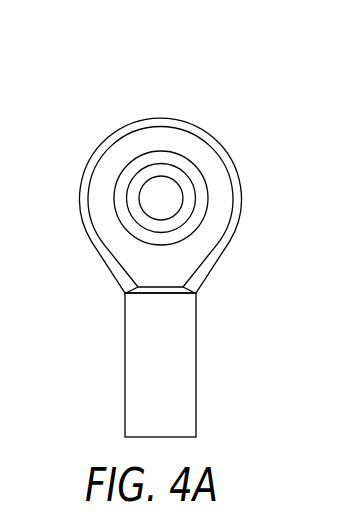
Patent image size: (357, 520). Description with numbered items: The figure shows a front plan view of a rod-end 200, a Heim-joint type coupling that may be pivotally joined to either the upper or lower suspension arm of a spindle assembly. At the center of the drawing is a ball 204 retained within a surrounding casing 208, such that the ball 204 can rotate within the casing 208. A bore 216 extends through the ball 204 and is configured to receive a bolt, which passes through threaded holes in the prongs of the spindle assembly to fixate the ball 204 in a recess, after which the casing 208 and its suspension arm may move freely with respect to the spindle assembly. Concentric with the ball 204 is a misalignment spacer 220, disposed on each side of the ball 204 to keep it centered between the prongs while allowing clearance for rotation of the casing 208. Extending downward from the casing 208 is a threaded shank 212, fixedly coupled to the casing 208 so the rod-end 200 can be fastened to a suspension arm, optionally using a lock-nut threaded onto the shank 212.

The rod-end 200 is at (211, 77).
The ball 204 is at (137, 163).
The casing 208 is at (207, 133).
The threaded shank 212 is at (142, 367).
The bore 216 is at (170, 178).
The misalignment spacer 220 is at (185, 225).